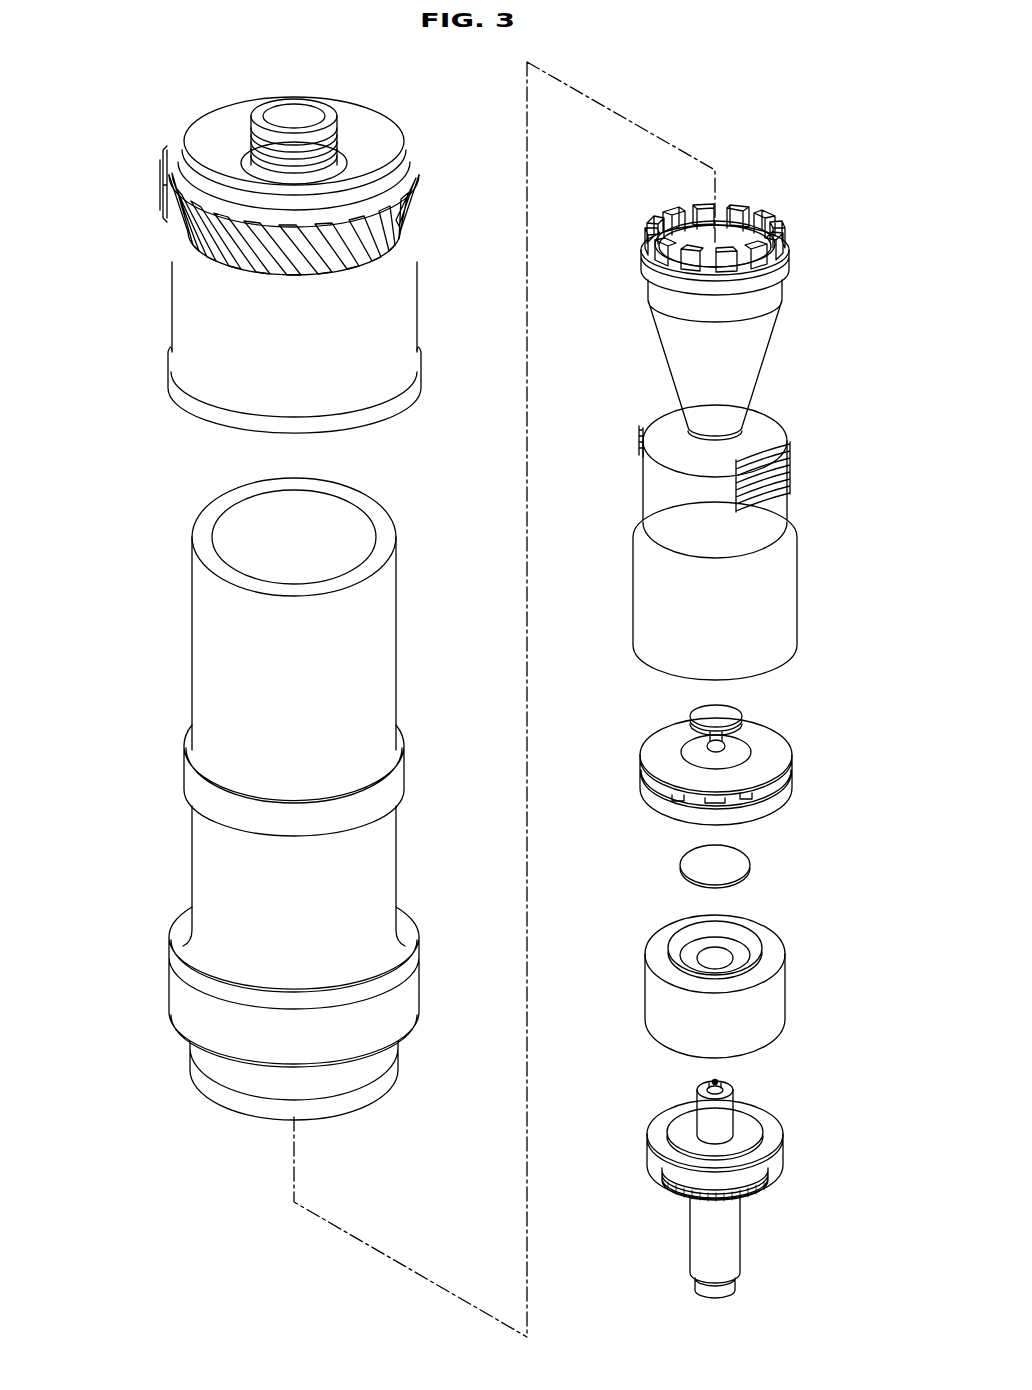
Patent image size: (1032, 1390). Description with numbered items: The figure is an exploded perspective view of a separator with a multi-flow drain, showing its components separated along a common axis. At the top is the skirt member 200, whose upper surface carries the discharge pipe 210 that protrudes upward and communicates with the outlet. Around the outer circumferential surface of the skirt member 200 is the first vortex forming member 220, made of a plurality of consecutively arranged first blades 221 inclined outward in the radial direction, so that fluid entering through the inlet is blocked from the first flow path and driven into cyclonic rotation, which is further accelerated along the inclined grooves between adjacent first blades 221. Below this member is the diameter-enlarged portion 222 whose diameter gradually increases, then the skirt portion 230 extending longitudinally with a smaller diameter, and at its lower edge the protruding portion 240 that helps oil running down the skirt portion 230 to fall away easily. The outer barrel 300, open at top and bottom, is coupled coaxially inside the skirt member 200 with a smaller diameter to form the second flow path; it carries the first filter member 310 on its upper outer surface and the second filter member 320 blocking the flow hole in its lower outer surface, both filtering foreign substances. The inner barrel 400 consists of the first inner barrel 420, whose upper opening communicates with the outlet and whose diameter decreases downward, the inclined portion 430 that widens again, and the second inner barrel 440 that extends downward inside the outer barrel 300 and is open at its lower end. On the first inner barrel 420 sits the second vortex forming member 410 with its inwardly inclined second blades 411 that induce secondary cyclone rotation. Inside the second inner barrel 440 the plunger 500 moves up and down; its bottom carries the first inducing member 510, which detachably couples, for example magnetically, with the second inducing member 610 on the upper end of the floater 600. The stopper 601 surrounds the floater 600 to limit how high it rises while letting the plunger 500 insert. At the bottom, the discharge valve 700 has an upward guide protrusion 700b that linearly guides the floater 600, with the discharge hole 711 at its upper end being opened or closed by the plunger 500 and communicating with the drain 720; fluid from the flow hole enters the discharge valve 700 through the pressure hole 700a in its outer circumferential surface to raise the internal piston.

The skirt member 200 is at (269, 264).
The discharge pipe 210 is at (240, 150).
The first vortex forming member 220 is at (282, 210).
The first blades 221 is at (385, 255).
The diameter-enlarged portion 222 is at (200, 252).
The skirt portion 230 is at (183, 300).
The protruding portion 240 is at (180, 398).
The outer barrel 300 is at (252, 799).
The first filter member 310 is at (210, 632).
The second filter member 320 is at (180, 981).
The inner barrel 400 is at (736, 410).
The second vortex forming member 410 is at (761, 218).
The second blades 411 is at (776, 200).
The first inner barrel 420 is at (755, 345).
The inclined portion 430 is at (768, 430).
The second inner barrel 440 is at (657, 493).
The plunger 500 is at (800, 745).
The first inducing member 510 is at (738, 858).
The floater 600 is at (749, 963).
The stopper 601 is at (775, 1000).
The second inducing member 610 is at (738, 953).
The discharge valve 700 is at (725, 1177).
The pressure hole 700a is at (770, 1178).
The guide protrusion 700b is at (705, 1120).
The discharge hole 711 is at (716, 1081).
The drain 720 is at (700, 1243).